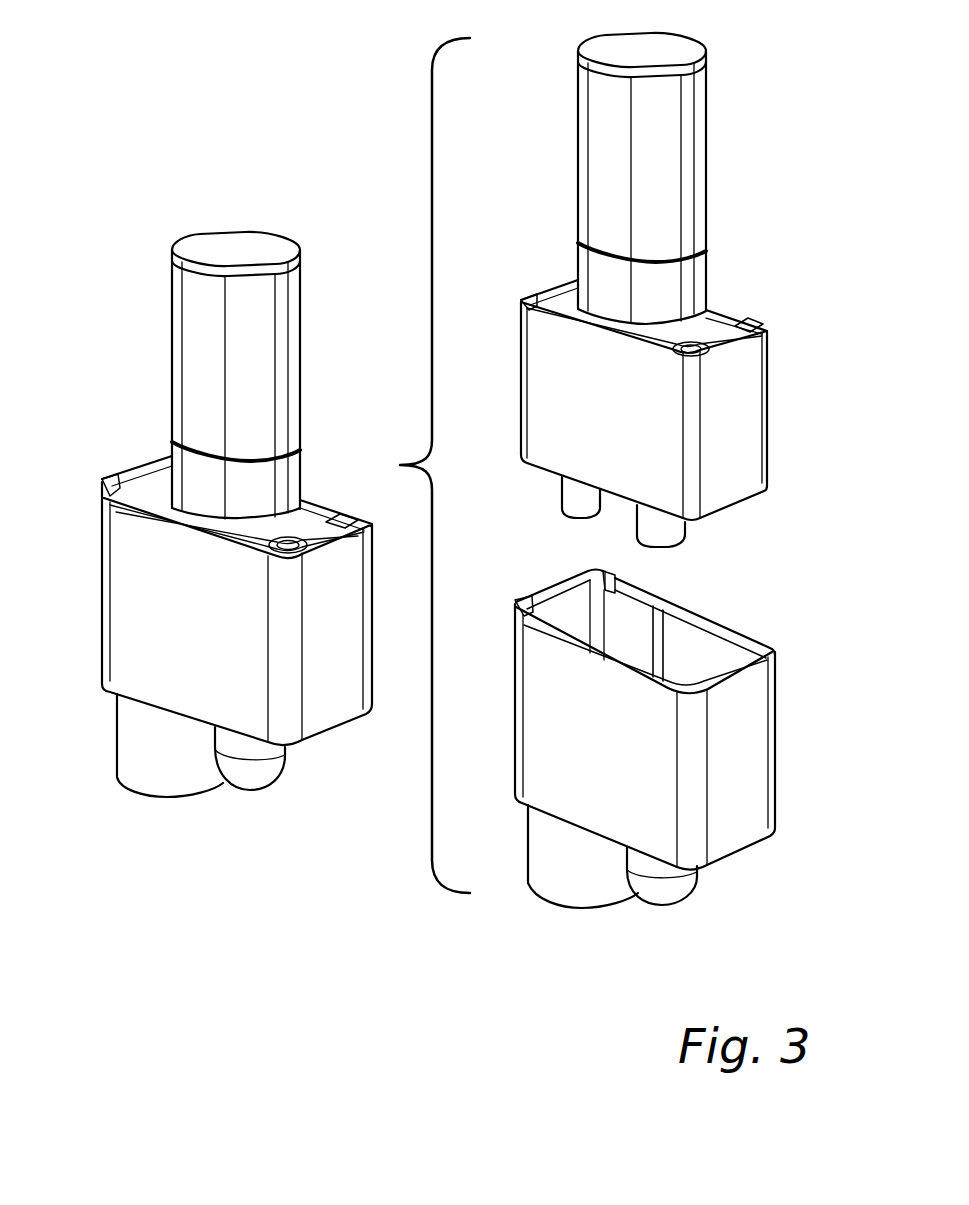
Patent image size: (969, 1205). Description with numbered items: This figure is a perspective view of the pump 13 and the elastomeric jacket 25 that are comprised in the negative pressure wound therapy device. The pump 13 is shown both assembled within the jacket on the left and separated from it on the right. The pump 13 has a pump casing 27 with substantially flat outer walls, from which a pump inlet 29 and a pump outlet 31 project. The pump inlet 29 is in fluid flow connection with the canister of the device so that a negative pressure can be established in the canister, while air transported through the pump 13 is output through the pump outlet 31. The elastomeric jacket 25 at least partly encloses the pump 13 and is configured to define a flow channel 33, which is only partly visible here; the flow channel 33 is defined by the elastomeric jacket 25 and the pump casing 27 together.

The pump 13 is at (148, 346).
The elastomeric jacket 25 is at (147, 610).
The pump casing 27 is at (760, 393).
The pump inlet 29 is at (572, 518).
The pump outlet 31 is at (675, 553).
The flow channel 33 is at (650, 628).